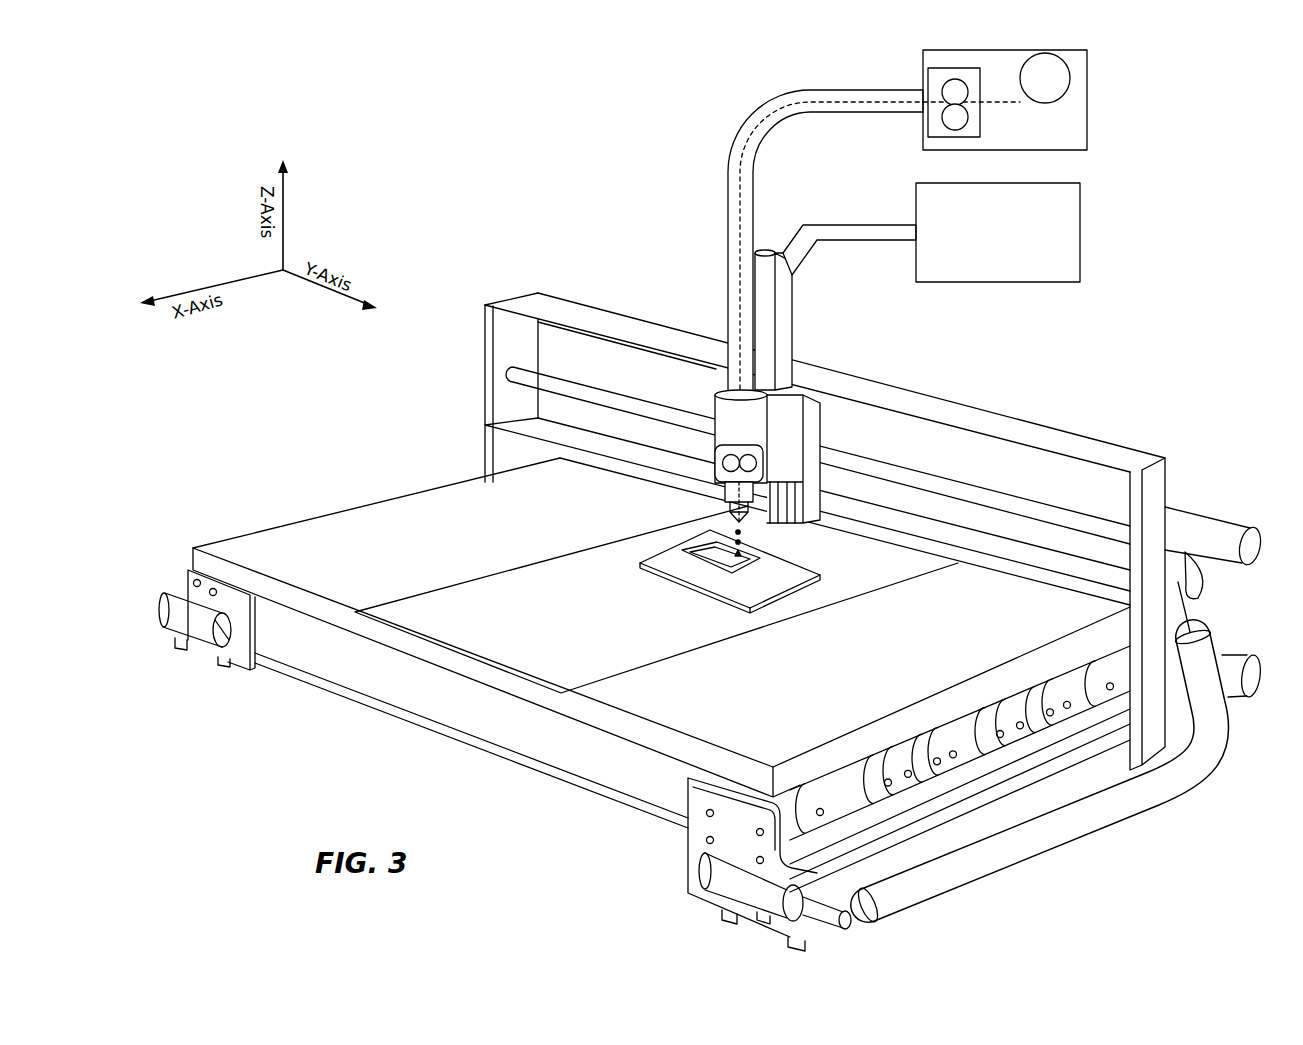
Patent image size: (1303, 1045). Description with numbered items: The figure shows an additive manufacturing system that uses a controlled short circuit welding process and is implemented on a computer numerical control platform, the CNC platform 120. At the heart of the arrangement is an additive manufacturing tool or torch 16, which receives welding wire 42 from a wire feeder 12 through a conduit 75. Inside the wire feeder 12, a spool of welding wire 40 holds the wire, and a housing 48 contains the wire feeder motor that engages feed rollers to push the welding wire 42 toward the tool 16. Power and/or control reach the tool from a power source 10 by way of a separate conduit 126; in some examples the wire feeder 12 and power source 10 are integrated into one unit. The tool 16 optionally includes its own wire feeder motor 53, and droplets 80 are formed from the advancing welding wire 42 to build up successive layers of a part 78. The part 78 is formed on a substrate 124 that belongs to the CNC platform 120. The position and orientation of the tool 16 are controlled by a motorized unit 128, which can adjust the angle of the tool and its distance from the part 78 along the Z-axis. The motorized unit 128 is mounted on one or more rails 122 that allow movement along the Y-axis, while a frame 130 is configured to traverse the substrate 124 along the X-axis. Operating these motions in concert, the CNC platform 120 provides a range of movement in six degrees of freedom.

The power source 10 is at (1080, 213).
The wire feeder 12 is at (1087, 97).
The welding tool 16 is at (707, 485).
The spool of welding wire 40 is at (1067, 57).
The welding wire 42 is at (740, 155).
The housing 48 is at (965, 68).
The wire feeder motor 53 is at (723, 442).
The conduit 75 is at (803, 90).
The part 78 is at (668, 583).
The droplets 80 is at (745, 533).
The CNC platform 120 is at (603, 197).
The rails 122 is at (512, 381).
The substrate 124 is at (437, 537).
The conduit 126 is at (833, 225).
The motorized unit 128 is at (790, 451).
The frame 130 is at (982, 407).